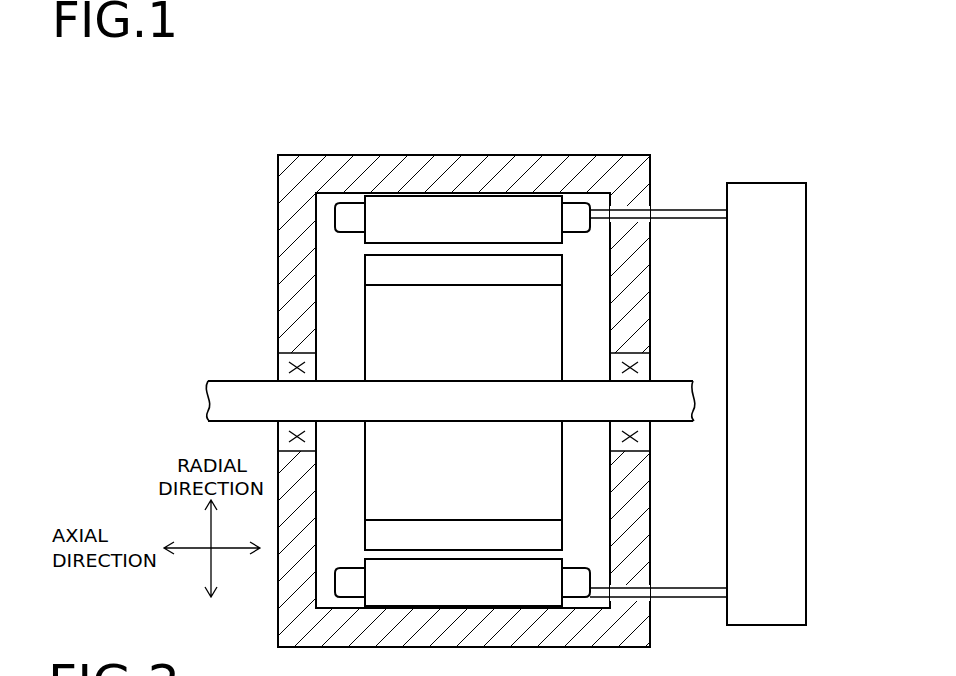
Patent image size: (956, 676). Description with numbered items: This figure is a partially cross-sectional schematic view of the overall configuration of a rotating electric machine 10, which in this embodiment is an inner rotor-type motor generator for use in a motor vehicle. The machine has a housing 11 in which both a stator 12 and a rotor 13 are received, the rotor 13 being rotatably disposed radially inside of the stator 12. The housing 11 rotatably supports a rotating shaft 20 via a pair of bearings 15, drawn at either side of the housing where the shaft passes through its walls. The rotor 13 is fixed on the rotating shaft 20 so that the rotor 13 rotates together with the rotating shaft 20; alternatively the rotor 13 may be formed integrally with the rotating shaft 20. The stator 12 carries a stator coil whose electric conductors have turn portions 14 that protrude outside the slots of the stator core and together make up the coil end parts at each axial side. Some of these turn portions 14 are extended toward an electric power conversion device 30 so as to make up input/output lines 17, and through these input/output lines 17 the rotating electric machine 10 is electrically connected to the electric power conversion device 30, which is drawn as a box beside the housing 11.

The rotating electric machine 10 is at (264, 127).
The housing 11 is at (328, 174).
The stator 12 is at (408, 210).
The rotor 13 is at (445, 305).
The turn portions 14 is at (576, 213).
The bearings 15 is at (292, 348).
The input/output lines 17 is at (693, 214).
The rotating shaft 20 is at (250, 400).
The electric power conversion device 30 is at (807, 235).